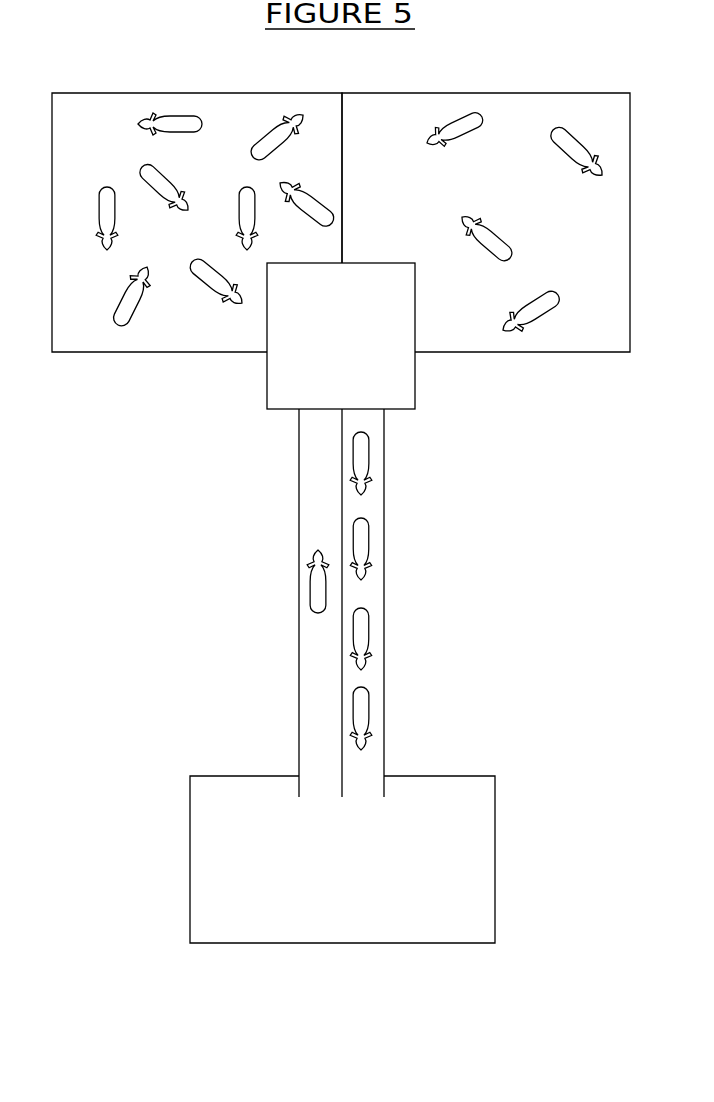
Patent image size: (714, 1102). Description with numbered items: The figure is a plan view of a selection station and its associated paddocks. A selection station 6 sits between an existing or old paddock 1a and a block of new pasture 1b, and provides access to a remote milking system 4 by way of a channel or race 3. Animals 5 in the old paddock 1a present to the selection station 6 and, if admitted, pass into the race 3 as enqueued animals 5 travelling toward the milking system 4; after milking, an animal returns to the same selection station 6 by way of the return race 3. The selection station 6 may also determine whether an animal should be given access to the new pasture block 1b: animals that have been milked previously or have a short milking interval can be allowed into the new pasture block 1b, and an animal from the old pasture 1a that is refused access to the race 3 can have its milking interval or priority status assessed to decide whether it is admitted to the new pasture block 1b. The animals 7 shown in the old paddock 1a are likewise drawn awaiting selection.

The old paddock 1a is at (197, 222).
The new pasture block 1b is at (486, 222).
The channel or race 3 is at (384, 472).
The remote milking system 4 is at (342, 859).
The animals 5 is at (317, 597).
The selection station 6 is at (341, 336).
The fish in holding tank 7 is at (98, 250).